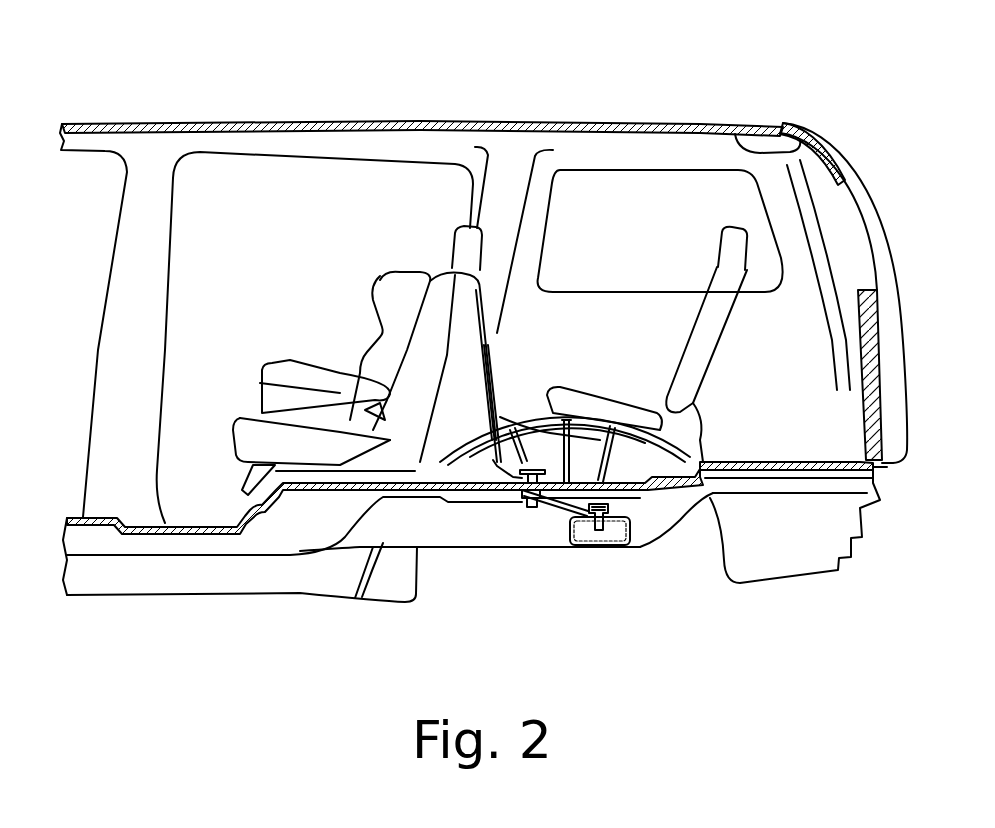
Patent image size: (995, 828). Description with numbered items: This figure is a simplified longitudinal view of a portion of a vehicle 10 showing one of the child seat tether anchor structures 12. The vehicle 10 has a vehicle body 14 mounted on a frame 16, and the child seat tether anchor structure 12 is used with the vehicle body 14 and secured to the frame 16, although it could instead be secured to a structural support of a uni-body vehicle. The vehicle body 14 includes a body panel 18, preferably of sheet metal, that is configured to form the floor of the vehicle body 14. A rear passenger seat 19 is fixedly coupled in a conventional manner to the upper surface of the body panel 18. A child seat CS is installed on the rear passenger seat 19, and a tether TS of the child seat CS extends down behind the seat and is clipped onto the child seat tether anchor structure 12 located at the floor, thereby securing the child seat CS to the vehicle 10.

The vehicle 10 is at (318, 121).
The vehicle body 14 is at (482, 123).
The child seat tether anchor structure 12 is at (533, 521).
The frame 16 is at (767, 497).
The body panel 18 is at (638, 522).
The rear passenger seat 19 is at (400, 463).
The child seat CS is at (357, 328).
The tether TS is at (496, 353).